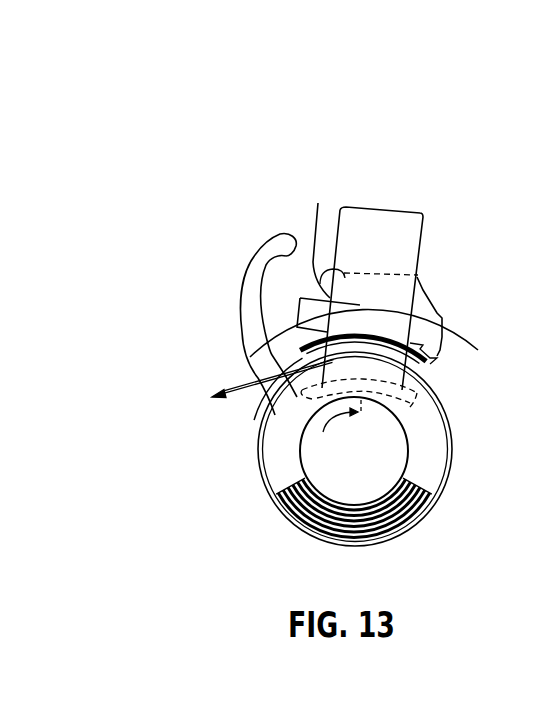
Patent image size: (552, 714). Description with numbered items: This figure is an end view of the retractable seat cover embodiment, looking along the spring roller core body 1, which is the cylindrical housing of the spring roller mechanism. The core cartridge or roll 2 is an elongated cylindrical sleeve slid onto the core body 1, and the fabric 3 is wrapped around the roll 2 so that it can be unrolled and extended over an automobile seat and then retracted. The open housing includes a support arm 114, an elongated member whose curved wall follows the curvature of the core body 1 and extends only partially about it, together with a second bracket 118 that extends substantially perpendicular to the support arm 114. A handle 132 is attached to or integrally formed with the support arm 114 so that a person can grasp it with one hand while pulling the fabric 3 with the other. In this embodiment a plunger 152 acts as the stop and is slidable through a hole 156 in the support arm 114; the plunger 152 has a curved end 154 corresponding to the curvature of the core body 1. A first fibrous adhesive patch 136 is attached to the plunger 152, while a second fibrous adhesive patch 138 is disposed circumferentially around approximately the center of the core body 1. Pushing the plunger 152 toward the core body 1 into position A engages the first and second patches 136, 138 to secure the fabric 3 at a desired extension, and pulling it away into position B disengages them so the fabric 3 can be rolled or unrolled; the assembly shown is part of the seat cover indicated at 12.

The spring roller core body 1 is at (300, 460).
The fabric 3 is at (228, 393).
The assembly 12 is at (544, 268).
The support arm 114 is at (387, 335).
The second bracket 118 is at (276, 401).
The handle 132 is at (275, 253).
The first fibrous adhesive patch 136 is at (368, 328).
The second fibrous adhesive patch 138 is at (418, 433).
The plunger 152 is at (398, 247).
The curved end 154 is at (437, 356).
The hole 156 is at (318, 203).
The core cartridge 2 is at (547, 578).
The position A is at (300, 363).
The position B is at (368, 257).